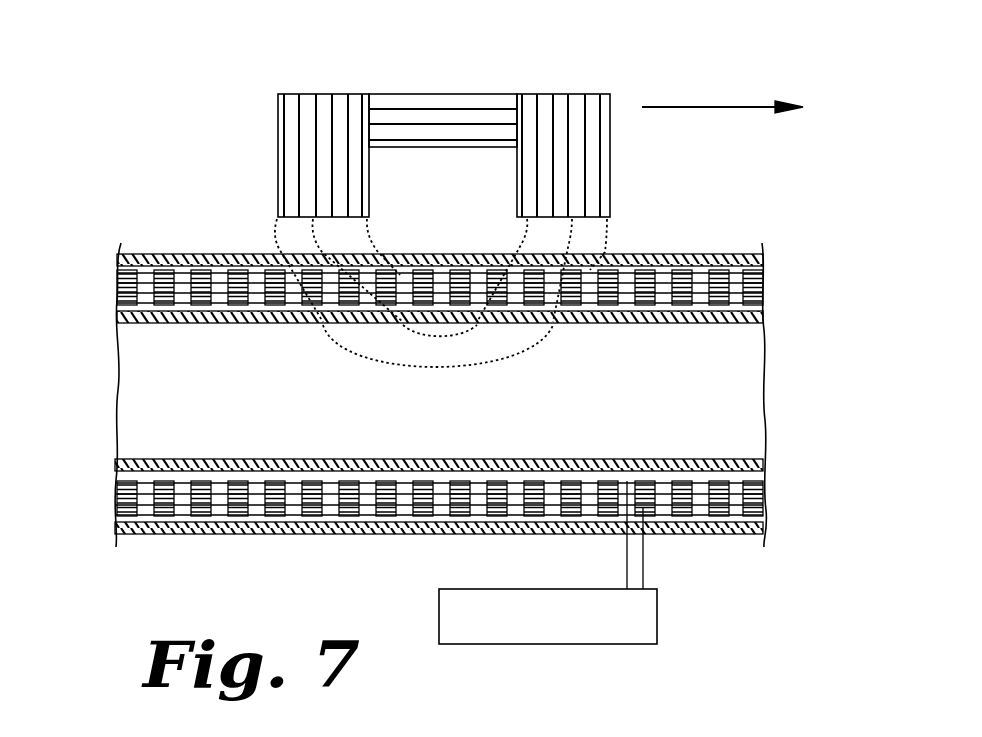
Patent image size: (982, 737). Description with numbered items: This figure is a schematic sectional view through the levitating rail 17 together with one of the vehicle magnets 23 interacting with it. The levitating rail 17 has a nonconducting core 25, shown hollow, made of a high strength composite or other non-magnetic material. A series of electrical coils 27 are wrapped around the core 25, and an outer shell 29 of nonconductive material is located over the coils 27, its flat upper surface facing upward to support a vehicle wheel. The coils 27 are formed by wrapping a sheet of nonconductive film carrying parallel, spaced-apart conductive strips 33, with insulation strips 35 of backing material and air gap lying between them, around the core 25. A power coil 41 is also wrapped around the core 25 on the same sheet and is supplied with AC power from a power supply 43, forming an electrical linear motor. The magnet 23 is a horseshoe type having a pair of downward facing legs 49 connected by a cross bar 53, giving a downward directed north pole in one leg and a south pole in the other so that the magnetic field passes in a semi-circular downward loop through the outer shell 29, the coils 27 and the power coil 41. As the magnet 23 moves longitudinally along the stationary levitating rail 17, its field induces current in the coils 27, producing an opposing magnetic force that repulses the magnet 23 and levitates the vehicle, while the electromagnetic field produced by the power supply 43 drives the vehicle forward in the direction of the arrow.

The levitating rail 17 is at (408, 369).
The magnet 23 is at (371, 128).
The nonconducting core 25 is at (673, 325).
The electrical coils 27 is at (408, 293).
The outer shell 29 is at (745, 256).
The conductive strips 33 is at (424, 538).
The insulation strips 35 is at (222, 514).
The power coil 41 is at (645, 270).
The power supply 43 is at (439, 597).
The legs 49 is at (283, 170).
The cross bar 53 is at (427, 94).